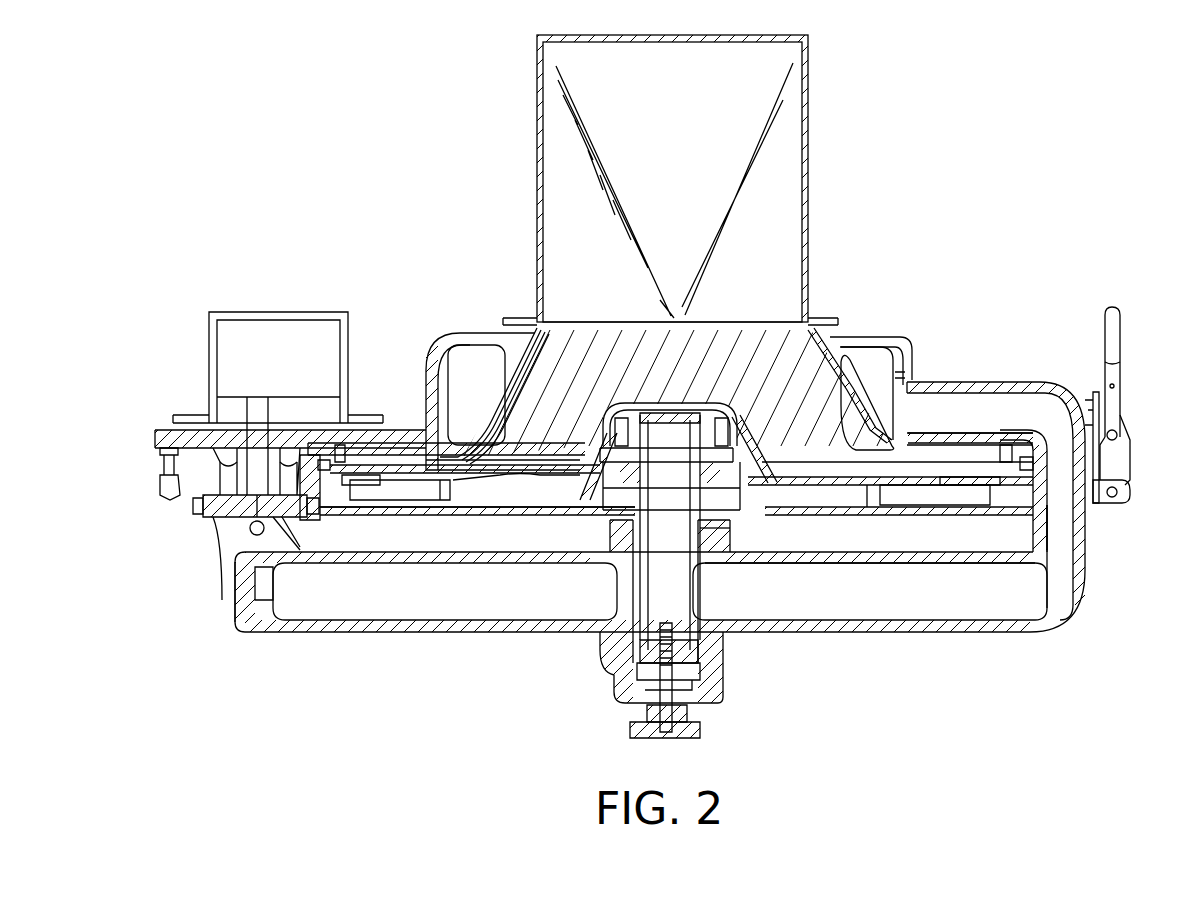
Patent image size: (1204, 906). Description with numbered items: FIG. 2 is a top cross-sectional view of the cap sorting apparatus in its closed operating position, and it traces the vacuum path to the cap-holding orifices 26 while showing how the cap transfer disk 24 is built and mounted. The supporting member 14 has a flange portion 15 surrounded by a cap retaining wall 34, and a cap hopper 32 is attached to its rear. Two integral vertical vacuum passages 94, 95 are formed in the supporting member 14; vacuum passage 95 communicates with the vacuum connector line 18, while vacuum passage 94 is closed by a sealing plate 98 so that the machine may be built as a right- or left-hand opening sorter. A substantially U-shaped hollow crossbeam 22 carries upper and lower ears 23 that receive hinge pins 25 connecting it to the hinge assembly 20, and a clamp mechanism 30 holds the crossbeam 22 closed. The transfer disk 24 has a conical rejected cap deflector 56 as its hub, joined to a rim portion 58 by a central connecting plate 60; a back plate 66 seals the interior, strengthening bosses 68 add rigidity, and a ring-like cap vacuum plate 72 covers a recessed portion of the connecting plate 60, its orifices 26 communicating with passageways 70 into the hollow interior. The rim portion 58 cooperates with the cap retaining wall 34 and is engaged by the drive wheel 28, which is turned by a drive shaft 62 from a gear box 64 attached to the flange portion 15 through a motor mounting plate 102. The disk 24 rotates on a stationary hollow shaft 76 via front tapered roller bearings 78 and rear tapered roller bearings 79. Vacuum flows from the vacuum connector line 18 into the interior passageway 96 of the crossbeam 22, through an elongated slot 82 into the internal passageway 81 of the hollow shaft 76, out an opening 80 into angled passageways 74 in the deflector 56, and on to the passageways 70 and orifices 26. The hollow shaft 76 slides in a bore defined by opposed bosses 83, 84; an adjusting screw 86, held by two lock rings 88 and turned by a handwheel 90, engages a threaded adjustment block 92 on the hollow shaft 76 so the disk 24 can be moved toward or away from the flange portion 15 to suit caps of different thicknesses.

The supporting member 14 is at (872, 337).
The flange portion 15 is at (915, 455).
The vacuum connector line 18 is at (960, 382).
The hinge assembly 20 is at (198, 565).
The crossbeam 22 is at (1085, 605).
The ears 23 is at (222, 580).
The cap transfer disk 24 is at (487, 520).
The hinge pins 25 is at (225, 530).
The orifices 26 is at (358, 445).
The drive wheel 28 is at (215, 517).
The clamp mechanism 30 is at (1125, 476).
The cap hopper 32 is at (808, 205).
The cap retaining wall 34 is at (315, 520).
The rejected cap deflector 56 is at (740, 418).
The rim portion 58 is at (1030, 510).
The connecting plate 60 is at (515, 472).
The drive shaft 62 is at (240, 400).
The gear box 64 is at (310, 312).
The back plate 66 is at (430, 515).
The strengthening bosses 68 is at (448, 497).
The passageways 70 is at (355, 482).
The cap vacuum plate 72 is at (390, 460).
The angled passageways 74 is at (580, 497).
The hollow shaft 76 is at (605, 530).
The front tapered roller bearings 78 is at (645, 415).
The rear tapered roller bearings 79 is at (600, 470).
The opening 80 is at (700, 462).
The internal passageway 81 is at (685, 534).
The elongated slot 82 is at (700, 578).
The boss 83 is at (730, 534).
The boss 84 is at (723, 663).
The adjusting screw 86 is at (690, 690).
The lock rings 88 is at (640, 712).
The handwheel 90 is at (630, 735).
The threaded adjustment block 92 is at (650, 676).
The vacuum passage 94 is at (484, 398).
The vacuum passage 95 is at (884, 398).
The interior passageway 96 is at (1022, 603).
The sealing plate 98 is at (426, 365).
The motor mounting plate 102 is at (165, 430).